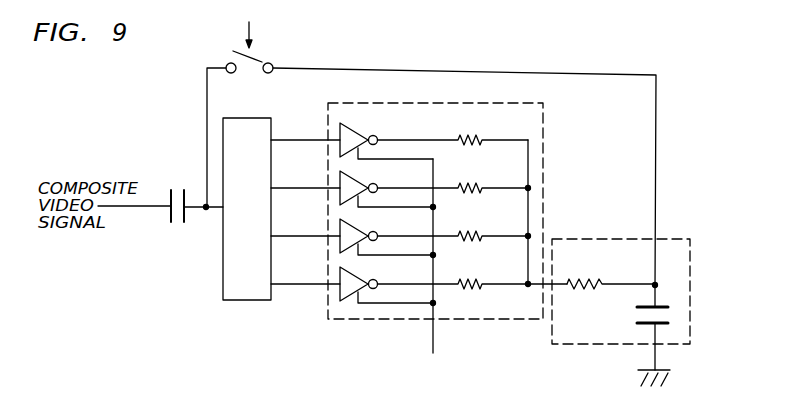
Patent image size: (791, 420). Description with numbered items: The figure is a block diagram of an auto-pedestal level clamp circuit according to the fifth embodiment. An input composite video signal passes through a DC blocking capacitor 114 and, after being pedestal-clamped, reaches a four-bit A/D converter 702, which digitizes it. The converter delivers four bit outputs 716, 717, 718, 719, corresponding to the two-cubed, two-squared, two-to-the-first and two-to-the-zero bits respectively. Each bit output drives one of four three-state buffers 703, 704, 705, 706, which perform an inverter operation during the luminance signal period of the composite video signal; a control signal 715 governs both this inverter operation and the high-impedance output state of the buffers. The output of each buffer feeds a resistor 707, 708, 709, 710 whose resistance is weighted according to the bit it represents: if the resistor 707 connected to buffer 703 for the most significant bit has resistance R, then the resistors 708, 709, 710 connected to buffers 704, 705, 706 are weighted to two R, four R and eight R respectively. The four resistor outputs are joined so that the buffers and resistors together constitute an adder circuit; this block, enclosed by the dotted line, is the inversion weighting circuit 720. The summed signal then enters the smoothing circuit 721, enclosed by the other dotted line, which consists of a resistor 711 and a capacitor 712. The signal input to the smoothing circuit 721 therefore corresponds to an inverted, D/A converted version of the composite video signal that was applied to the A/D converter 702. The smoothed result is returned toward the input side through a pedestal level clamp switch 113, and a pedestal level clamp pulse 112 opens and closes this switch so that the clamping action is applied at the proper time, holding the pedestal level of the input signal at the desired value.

The pedestal level clamp pulse 112 is at (249, 28).
The pedestal level clamp switch 113 is at (246, 73).
The DC blocking capacitor 114 is at (181, 189).
The 4-bit A/D converter 702 is at (236, 301).
The 3-state buffer 703 is at (355, 126).
The 3-state buffer 704 is at (355, 174).
The 3-state buffer 705 is at (355, 222).
The 3-state buffer 706 is at (355, 270).
The resistor 707 is at (466, 133).
The resistor 708 is at (466, 181).
The resistor 709 is at (466, 229).
The resistor 710 is at (466, 277).
The resistor 711 is at (583, 278).
The capacitor 712 is at (635, 312).
The control signal 715 is at (434, 345).
The 2^3-bit output 716 is at (297, 131).
The 2^2-bit output 717 is at (297, 178).
The 2^1-bit output 718 is at (297, 225).
The 2^0-bit output 719 is at (297, 273).
The inversion weighting circuit 720 is at (355, 321).
The smoothing circuit 721 is at (600, 238).